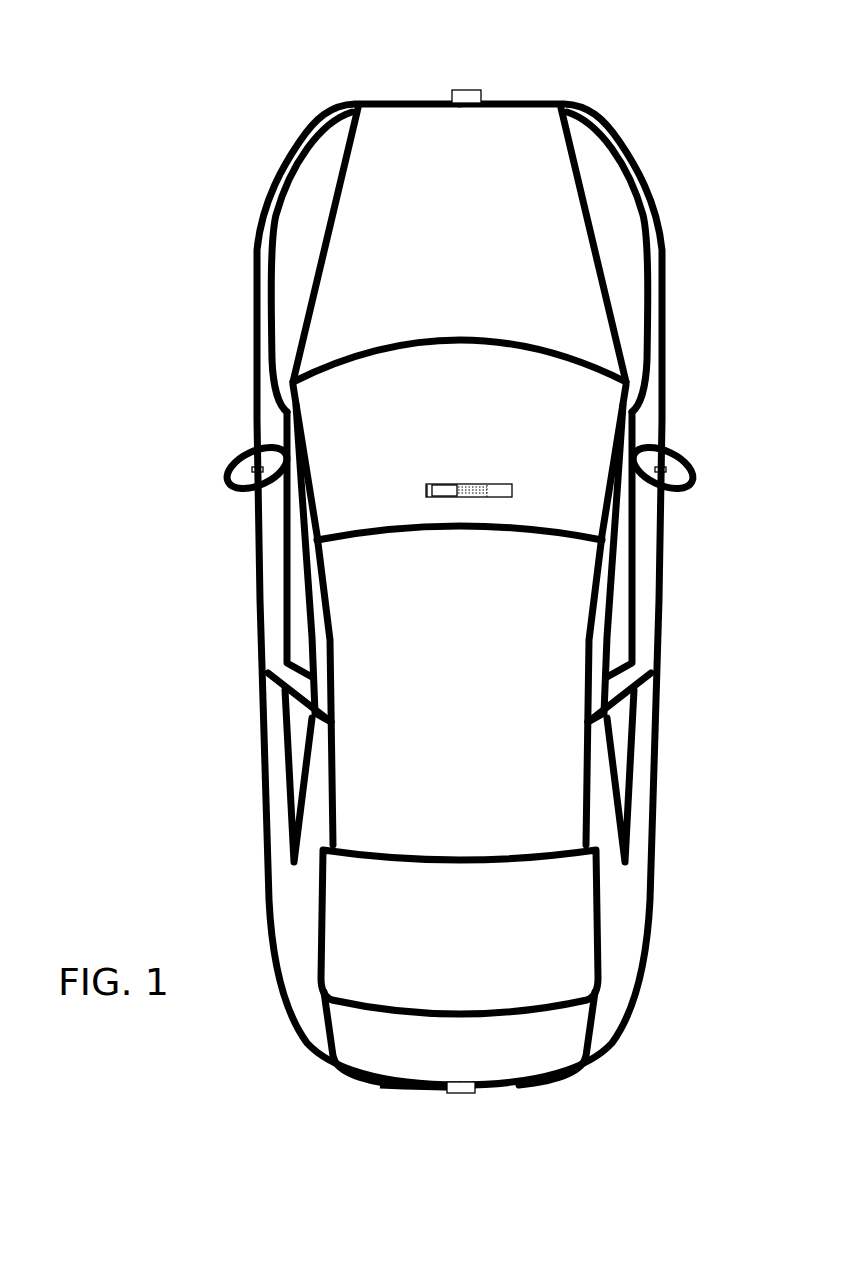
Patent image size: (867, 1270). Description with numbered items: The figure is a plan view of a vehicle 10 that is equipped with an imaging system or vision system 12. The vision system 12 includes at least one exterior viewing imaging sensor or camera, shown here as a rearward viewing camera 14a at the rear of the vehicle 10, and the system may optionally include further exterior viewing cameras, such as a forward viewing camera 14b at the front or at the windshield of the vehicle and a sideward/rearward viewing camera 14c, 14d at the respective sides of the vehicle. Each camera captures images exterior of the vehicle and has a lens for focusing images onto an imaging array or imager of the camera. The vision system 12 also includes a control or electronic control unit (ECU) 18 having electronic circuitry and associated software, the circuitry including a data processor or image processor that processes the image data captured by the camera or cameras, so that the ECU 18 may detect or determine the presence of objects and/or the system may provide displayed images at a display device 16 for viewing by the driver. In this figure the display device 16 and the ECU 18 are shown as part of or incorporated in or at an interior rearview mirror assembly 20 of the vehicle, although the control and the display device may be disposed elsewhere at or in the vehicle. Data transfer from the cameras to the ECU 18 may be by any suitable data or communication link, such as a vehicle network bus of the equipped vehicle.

The vehicle 10 is at (206, 188).
The vision system 12 is at (405, 1121).
The rearward viewing camera 14a is at (466, 1094).
The forward viewing camera 14b is at (470, 92).
The sideward/rearward viewing camera 14c is at (248, 462).
The sideward/rearward viewing camera 14d is at (676, 463).
The display device 16 is at (442, 485).
The electronic control unit (ECU) 18 is at (467, 485).
The interior rearview mirror assembly 20 is at (512, 485).